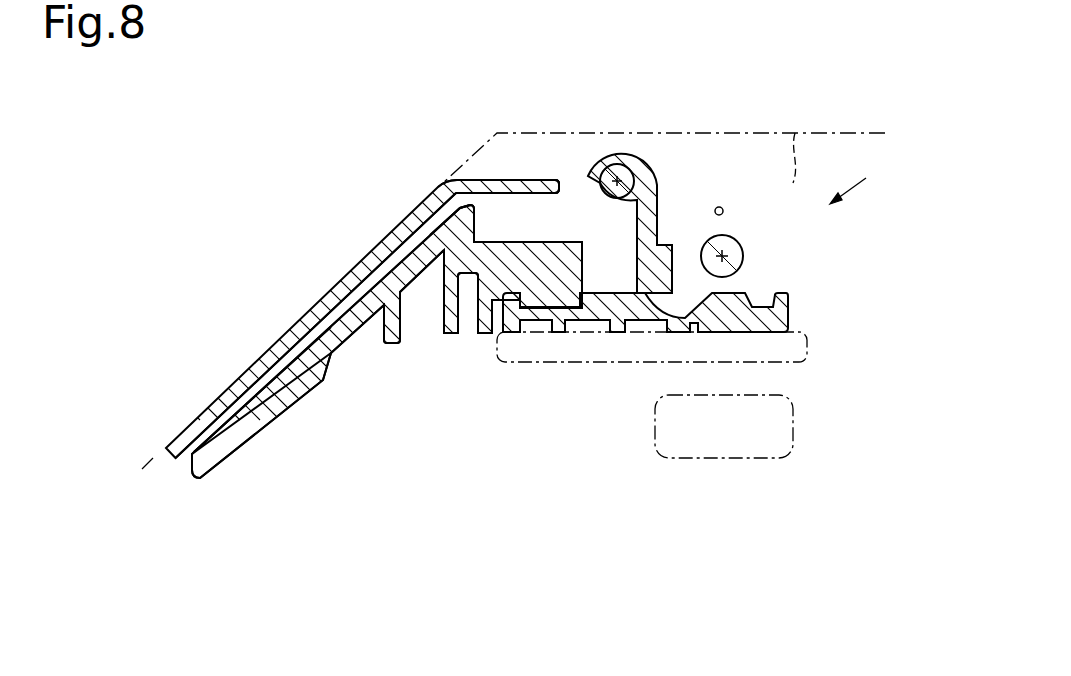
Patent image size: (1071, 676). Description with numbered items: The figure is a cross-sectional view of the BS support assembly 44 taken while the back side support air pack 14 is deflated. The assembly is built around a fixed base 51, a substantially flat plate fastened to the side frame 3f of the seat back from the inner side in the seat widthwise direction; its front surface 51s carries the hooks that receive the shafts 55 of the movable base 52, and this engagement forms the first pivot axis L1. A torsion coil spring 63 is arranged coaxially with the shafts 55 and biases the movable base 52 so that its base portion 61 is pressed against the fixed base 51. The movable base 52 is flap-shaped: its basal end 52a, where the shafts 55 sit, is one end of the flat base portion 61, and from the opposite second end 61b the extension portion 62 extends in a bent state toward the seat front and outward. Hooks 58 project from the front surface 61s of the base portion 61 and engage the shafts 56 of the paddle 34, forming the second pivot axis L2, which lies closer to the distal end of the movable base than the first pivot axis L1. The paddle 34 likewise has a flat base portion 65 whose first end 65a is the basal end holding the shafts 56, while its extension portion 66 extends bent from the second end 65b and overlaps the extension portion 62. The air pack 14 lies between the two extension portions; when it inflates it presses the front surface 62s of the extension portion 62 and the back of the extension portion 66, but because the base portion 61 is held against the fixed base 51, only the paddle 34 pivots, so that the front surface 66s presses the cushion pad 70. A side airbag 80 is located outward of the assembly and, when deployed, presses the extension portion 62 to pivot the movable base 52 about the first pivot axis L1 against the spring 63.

The paddle 34 is at (165, 458).
The base portion 65 is at (497, 178).
The first end 65a is at (556, 180).
The second end 65b is at (461, 180).
The front surface 66s is at (230, 377).
The movable base 52 is at (195, 476).
The extension portion 62 is at (324, 380).
The front surface 62s is at (283, 342).
The extension portion 66 is at (356, 325).
The base portion 61 is at (543, 296).
The second end 61b is at (442, 208).
The front surface 61s is at (522, 243).
The basal end 52a is at (573, 285).
The hook 58 is at (658, 228).
The shaft 56 is at (612, 193).
The second pivot axis L2 is at (630, 167).
The shaft 55 is at (742, 256).
The first pivot axis L1 is at (728, 256).
The torsion coil spring 63 is at (720, 208).
The fixed base 51 is at (788, 293).
The front surface 51s is at (613, 303).
The cushion pad 70 is at (798, 174).
The BS support assembly 44 is at (865, 181).
The back side support air pack 14 is at (178, 470).
The side frame 3f is at (808, 350).
The side airbag 80 is at (770, 458).